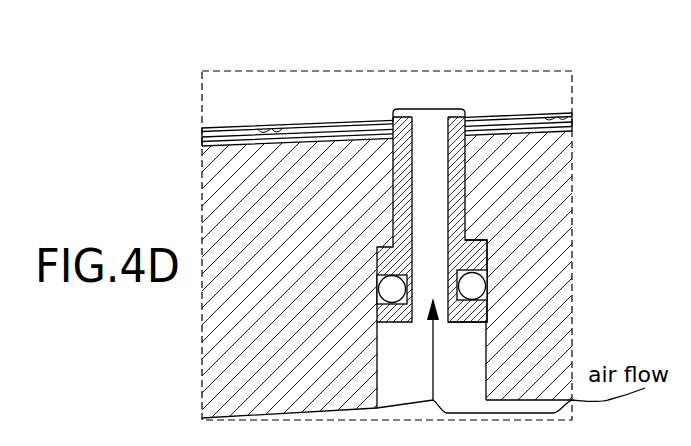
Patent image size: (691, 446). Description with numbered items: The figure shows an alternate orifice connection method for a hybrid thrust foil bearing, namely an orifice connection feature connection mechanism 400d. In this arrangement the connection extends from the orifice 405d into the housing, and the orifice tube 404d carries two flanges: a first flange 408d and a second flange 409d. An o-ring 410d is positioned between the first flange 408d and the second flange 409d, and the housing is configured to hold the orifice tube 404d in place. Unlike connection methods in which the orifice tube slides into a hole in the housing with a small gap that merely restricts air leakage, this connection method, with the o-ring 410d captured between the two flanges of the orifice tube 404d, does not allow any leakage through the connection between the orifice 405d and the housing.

The orifice connection feature connection mechanism 400d is at (350, 180).
The orifice 405d is at (428, 110).
The orifice tube 404d is at (457, 195).
The first flange 408d is at (468, 253).
The second flange 409d is at (470, 313).
The o-ring 410d is at (392, 290).